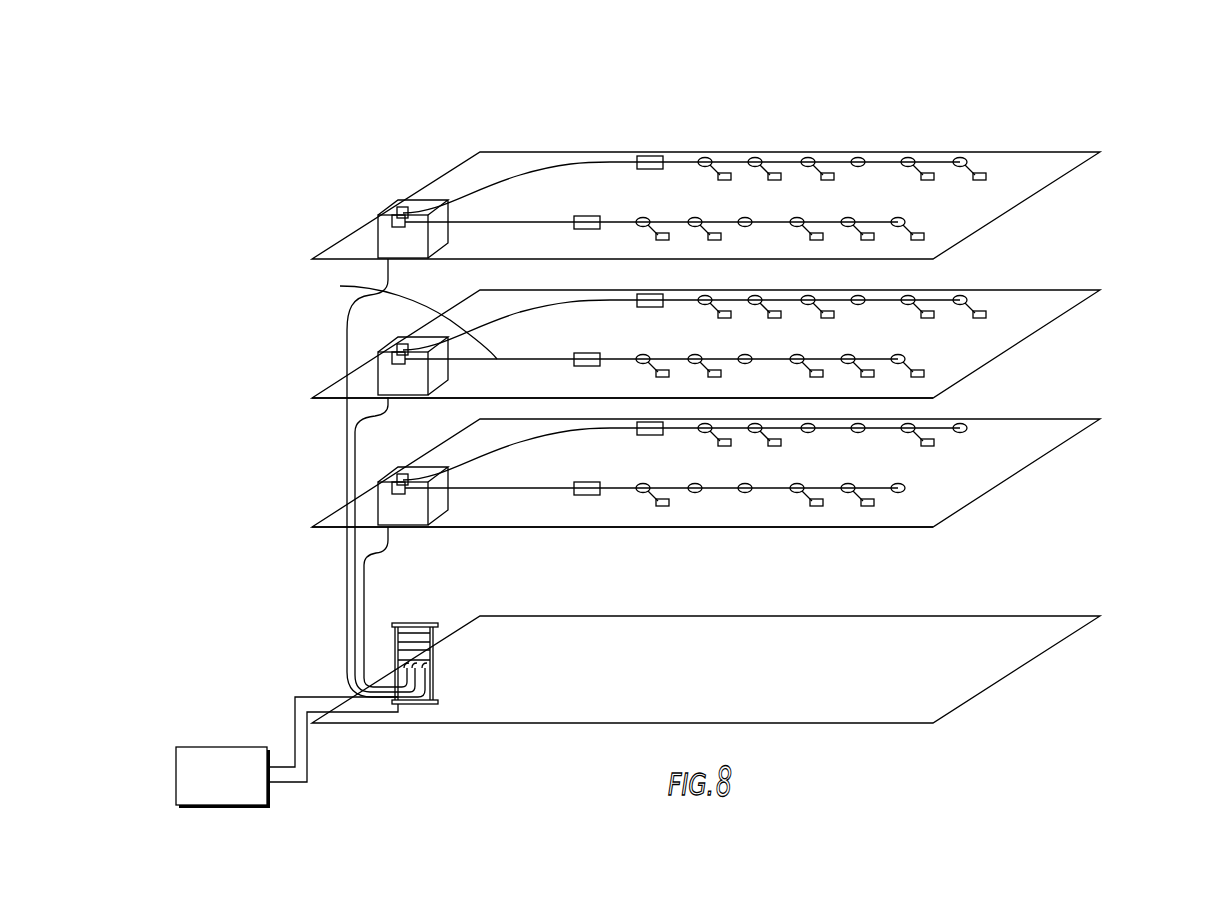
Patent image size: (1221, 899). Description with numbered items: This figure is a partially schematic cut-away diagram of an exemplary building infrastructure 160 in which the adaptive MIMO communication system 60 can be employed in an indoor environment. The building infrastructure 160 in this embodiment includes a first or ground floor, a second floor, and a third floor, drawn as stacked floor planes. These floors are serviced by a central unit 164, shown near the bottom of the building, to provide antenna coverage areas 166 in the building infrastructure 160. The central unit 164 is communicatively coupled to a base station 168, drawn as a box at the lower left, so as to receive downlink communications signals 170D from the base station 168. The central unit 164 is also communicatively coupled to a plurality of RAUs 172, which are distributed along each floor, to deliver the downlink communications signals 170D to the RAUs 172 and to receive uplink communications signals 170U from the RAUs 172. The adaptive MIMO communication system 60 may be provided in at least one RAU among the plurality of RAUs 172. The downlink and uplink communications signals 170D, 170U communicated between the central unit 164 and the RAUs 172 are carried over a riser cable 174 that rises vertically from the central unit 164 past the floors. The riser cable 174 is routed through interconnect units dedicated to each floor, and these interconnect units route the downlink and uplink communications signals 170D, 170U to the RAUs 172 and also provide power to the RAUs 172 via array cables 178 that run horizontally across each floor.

The adaptive MIMO communication system 60 is at (820, 102).
The building infrastructure 160 is at (1053, 520).
The antenna coverage areas 166 is at (893, 272).
The array cables 178 is at (598, 162).
The RAUs 172 is at (928, 173).
The riser cable 174 is at (347, 603).
The central unit 164 is at (445, 671).
The uplink communications signals 170U is at (291, 693).
The downlink communications signals 170D is at (312, 782).
The base station 168 is at (238, 786).